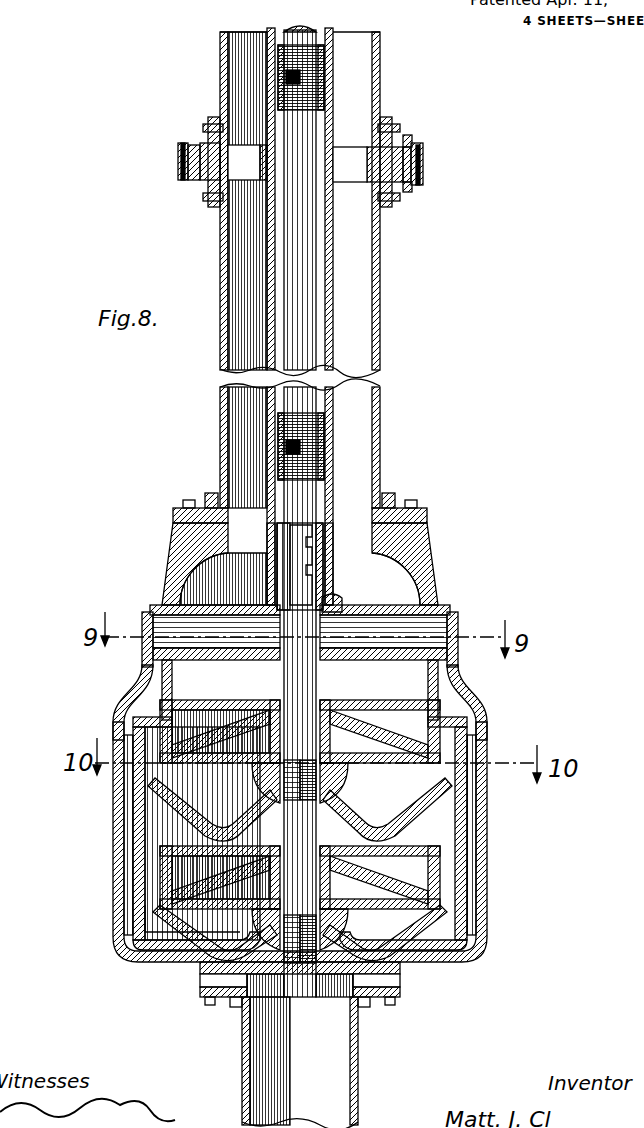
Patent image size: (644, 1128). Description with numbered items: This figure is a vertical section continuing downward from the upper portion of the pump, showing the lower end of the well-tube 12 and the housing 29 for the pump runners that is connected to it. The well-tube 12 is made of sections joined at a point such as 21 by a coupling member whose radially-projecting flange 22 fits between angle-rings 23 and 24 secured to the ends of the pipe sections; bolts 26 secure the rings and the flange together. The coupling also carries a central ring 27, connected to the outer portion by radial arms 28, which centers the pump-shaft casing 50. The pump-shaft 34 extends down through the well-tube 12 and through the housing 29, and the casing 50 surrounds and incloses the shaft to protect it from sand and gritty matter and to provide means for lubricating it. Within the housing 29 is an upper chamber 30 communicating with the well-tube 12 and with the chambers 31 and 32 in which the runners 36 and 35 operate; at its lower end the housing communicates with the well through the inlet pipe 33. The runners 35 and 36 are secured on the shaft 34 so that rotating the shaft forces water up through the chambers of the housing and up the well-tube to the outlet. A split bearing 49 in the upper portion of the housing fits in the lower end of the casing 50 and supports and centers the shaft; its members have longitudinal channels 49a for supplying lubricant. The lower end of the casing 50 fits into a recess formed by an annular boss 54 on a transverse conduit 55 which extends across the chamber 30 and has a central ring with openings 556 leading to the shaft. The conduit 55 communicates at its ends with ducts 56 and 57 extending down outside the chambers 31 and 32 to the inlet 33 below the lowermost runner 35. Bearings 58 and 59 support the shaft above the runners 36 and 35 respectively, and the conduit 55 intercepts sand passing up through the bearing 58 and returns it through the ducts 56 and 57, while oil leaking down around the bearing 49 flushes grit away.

The well-tube 12 is at (381, 94).
The joint between well-tube sections 21 is at (369, 172).
The radially-projecting flange 22 is at (425, 168).
The angle-ring 23 is at (414, 188).
The angle-ring 24 is at (414, 150).
The bolts 26 is at (198, 188).
The central ring 27 is at (340, 148).
The radial arms 28 is at (240, 172).
The housing 29 is at (418, 578).
The upper chamber 30 is at (396, 576).
The runner chamber 31 is at (456, 718).
The runner chamber 32 is at (442, 886).
The inlet pipe 33 is at (357, 1080).
The pump-shaft 34 is at (308, 26).
The runner 35 is at (192, 925).
The runner 36 is at (182, 769).
The bearing 49 is at (318, 577).
The longitudinal channels 49a is at (282, 546).
The casing 50 is at (334, 332).
The annular boss 54 is at (339, 606).
The transverse conduit 55 is at (412, 636).
The partition plate 556 is at (300, 642).
The duct 56 is at (130, 738).
The duct 57 is at (471, 734).
The bearing 58 is at (326, 690).
The bearing 59 is at (323, 883).